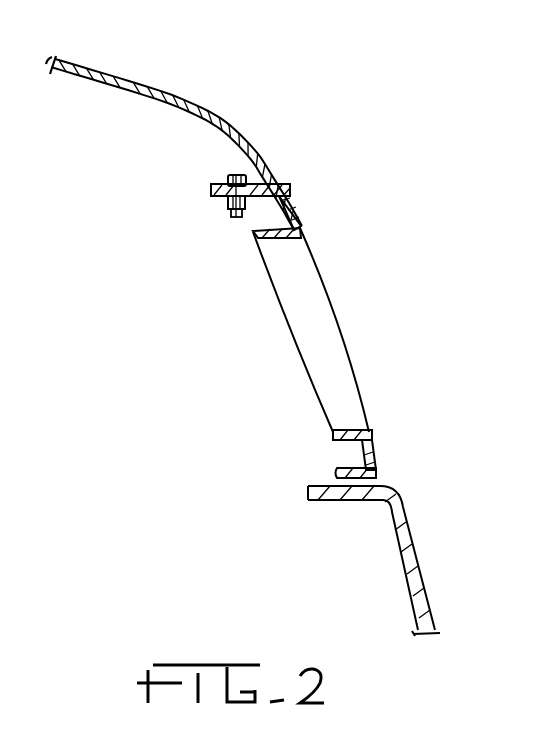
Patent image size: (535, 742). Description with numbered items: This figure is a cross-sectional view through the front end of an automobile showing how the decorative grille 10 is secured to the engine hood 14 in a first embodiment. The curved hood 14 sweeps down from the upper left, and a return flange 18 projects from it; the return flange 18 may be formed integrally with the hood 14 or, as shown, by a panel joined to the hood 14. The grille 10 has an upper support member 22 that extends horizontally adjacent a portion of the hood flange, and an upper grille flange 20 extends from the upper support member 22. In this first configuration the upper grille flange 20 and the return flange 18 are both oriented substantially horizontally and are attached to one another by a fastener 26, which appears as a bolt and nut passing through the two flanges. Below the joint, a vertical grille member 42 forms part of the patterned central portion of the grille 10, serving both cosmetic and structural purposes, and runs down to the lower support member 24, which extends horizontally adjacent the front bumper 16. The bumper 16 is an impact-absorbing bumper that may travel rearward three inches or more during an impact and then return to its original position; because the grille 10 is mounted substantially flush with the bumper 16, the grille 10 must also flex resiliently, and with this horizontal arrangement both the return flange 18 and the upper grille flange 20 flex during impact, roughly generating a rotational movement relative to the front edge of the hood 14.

The decorative grille 10 is at (356, 362).
The engine hood 14 is at (222, 118).
The front bumper 16 is at (412, 557).
The return flange 18 is at (220, 178).
The upper grille flange 20 is at (222, 205).
The upper support member 22 is at (289, 203).
The lower support member 24 is at (375, 450).
The fastener 26 is at (237, 215).
The vertical grille members 42 is at (318, 319).